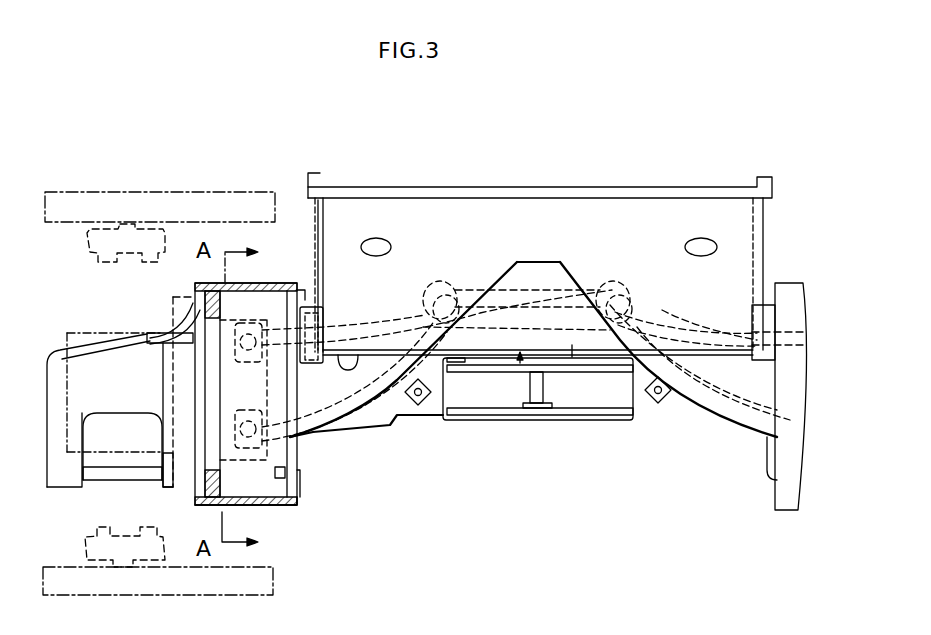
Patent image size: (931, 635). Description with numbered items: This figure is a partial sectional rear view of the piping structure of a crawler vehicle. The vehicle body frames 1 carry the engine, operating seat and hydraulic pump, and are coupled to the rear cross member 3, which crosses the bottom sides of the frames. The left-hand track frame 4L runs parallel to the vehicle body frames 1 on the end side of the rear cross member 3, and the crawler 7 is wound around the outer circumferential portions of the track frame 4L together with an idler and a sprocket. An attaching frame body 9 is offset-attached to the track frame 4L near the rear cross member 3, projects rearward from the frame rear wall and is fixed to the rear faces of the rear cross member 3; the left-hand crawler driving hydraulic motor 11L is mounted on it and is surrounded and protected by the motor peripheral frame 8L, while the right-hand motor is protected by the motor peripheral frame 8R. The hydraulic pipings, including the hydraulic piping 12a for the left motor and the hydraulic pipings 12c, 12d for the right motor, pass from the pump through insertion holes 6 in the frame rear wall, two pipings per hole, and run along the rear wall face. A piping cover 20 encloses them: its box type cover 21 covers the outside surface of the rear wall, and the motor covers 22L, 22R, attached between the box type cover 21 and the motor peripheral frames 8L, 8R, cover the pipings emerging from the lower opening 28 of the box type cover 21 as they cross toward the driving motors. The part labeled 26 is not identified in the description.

The vehicle body frame 1 is at (755, 235).
The rear cross member 3 is at (643, 407).
The left-hand track frame 4L is at (58, 352).
The piping insertion hole 6 is at (445, 282).
The crawler 7 is at (275, 577).
The left-hand motor peripheral frame 8L is at (277, 508).
The right-hand motor peripheral frame 8R is at (790, 467).
The attaching frame body 9 is at (193, 493).
The left-hand crawler driving hydraulic motor 11L is at (115, 327).
The hydraulic piping 12a is at (397, 425).
The hydraulic piping 12c is at (662, 310).
The hydraulic piping 12d is at (348, 353).
The piping cover 20 is at (521, 375).
The box type cover 21 is at (573, 358).
The left-hand motor cover 22L is at (343, 415).
The right-hand motor cover 22R is at (733, 417).
The post 26 is at (317, 295).
The lower opening 28 is at (357, 350).